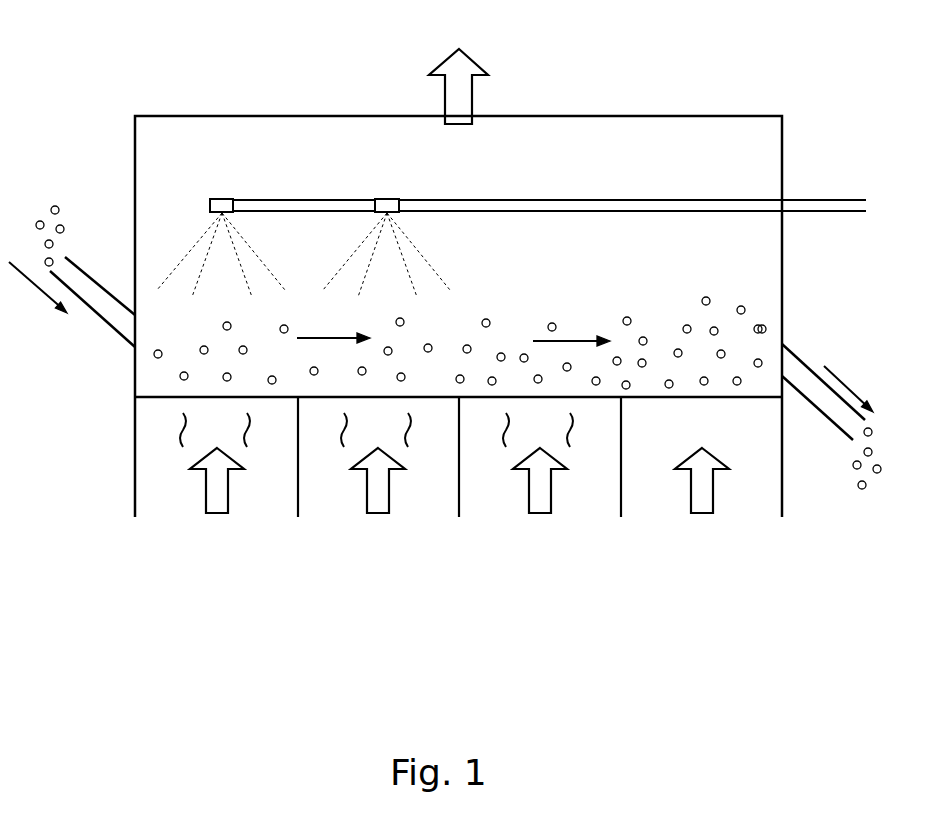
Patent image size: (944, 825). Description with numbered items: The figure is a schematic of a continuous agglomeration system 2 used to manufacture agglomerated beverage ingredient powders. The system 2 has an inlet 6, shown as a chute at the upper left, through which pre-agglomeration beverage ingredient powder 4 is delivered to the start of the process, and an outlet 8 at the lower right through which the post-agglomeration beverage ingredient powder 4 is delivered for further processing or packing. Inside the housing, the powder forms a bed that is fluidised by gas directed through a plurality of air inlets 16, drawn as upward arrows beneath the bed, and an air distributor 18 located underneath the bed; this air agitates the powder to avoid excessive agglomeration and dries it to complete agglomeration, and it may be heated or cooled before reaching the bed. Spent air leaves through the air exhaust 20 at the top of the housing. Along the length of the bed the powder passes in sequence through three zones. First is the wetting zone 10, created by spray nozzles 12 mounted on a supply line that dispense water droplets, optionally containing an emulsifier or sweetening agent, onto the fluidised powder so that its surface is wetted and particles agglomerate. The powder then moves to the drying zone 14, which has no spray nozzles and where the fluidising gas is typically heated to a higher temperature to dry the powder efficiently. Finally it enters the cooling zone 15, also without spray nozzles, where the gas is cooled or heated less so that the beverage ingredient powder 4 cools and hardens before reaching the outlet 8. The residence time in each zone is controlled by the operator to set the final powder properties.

The continuous agglomeration system 2 is at (822, 120).
The beverage ingredient powder 4 is at (40, 222).
The inlet 6 is at (80, 265).
The outlet 8 is at (809, 368).
The wetting zone 10 is at (302, 253).
The spray nozzles 12 is at (227, 197).
The drying zone 14 is at (525, 253).
The cooling zone 15 is at (693, 253).
The air inlets 16 is at (372, 517).
The air distributor 18 is at (153, 400).
The air exhaust 20 is at (450, 60).